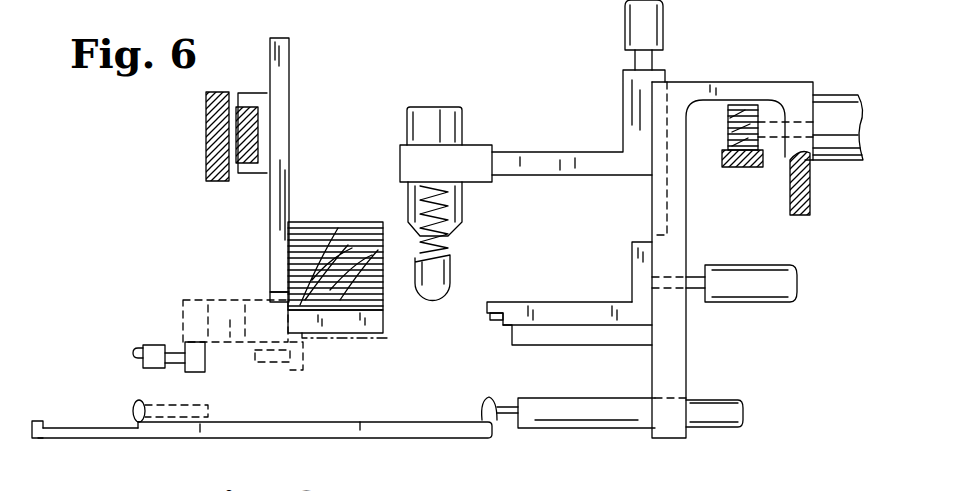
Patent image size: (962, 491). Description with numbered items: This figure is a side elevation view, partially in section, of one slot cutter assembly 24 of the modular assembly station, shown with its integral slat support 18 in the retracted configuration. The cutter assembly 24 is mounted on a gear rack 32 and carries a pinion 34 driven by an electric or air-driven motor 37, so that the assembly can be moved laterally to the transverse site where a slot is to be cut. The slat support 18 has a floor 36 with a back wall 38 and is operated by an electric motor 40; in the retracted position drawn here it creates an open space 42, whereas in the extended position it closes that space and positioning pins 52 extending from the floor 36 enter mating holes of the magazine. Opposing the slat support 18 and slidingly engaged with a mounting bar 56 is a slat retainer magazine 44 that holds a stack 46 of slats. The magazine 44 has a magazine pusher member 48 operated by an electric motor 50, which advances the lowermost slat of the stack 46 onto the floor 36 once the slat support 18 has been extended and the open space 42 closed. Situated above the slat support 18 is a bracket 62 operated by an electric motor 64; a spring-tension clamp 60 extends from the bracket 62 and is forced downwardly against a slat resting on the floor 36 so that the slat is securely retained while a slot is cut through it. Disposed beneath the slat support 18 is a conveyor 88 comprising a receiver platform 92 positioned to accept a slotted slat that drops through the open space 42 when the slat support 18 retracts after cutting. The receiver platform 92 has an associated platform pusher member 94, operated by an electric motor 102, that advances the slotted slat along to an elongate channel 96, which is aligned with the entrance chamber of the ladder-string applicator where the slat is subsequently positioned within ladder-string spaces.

The slat support 18 is at (592, 318).
The slot cutter assembly 24 is at (695, 90).
The gear rack 32 is at (742, 167).
The pinion 34 is at (755, 105).
The floor 36 is at (548, 310).
The motor 37 is at (833, 160).
The back wall 38 is at (637, 267).
The electric motor 40 is at (760, 295).
The open space 42 is at (432, 322).
The slat retainer magazine 44 is at (278, 228).
The stack 46 is at (327, 235).
The magazine pusher member 48 is at (232, 318).
The electric motor 50 is at (146, 341).
The positioning pin 52 is at (492, 320).
The mounting bar 56 is at (212, 130).
The spring-tension clamp 60 is at (450, 270).
The bracket 62 is at (558, 157).
The electric motor 64 is at (640, 27).
The conveyor 88 is at (131, 456).
The receiver platform 92 is at (360, 432).
The platform pusher member 94 is at (133, 405).
The elongate channel 96 is at (90, 428).
The electric motor 102 is at (710, 415).